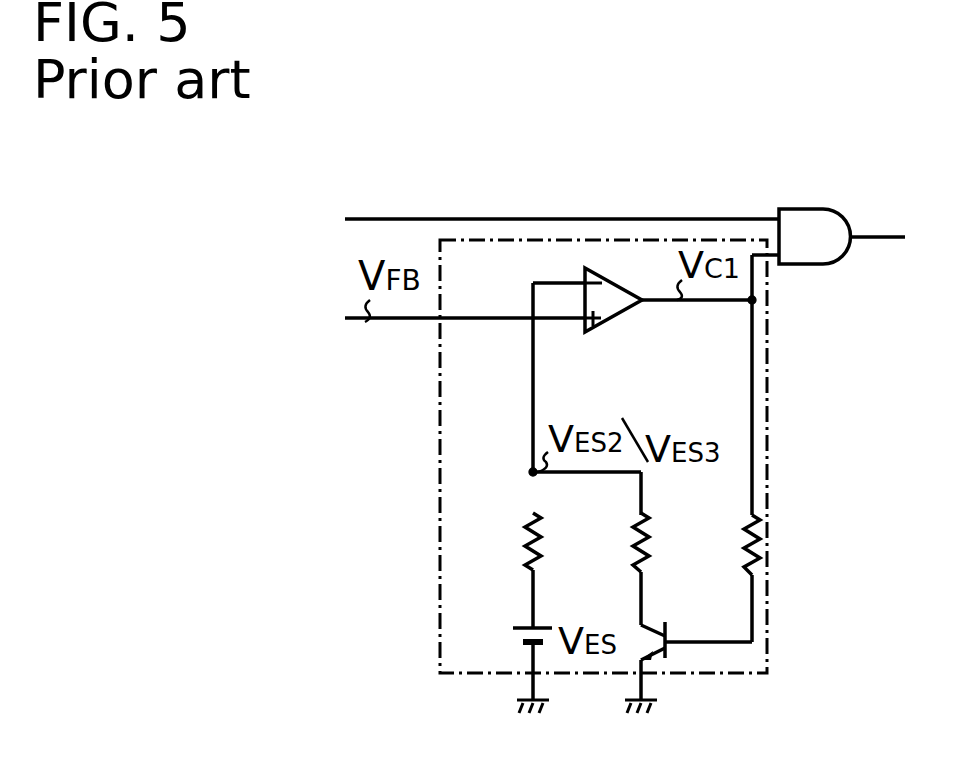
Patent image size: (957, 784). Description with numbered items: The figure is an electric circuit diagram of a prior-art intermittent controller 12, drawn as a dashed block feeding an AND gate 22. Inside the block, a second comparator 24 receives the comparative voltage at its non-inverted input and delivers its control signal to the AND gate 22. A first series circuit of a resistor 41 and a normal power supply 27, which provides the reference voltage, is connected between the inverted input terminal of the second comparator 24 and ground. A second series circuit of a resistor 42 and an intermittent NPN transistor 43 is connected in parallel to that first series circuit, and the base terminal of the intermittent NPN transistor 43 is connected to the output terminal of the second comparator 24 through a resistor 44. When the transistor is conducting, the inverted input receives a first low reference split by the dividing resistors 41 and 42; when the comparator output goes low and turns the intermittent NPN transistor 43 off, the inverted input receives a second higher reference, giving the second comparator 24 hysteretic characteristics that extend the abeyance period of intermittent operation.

The intermittent controller 12 is at (766, 394).
The AND gate 22 is at (800, 208).
The second comparator 24 is at (626, 308).
The normal power supply 27 is at (514, 628).
The resistor 41 is at (526, 536).
The resistor 42 is at (634, 536).
The intermittent NPN transistor 43 is at (634, 640).
The resistor 44 is at (746, 536).